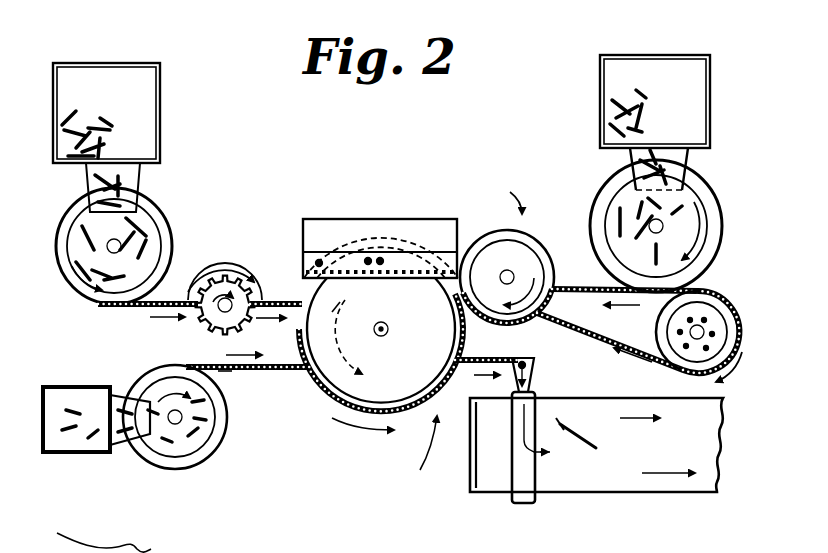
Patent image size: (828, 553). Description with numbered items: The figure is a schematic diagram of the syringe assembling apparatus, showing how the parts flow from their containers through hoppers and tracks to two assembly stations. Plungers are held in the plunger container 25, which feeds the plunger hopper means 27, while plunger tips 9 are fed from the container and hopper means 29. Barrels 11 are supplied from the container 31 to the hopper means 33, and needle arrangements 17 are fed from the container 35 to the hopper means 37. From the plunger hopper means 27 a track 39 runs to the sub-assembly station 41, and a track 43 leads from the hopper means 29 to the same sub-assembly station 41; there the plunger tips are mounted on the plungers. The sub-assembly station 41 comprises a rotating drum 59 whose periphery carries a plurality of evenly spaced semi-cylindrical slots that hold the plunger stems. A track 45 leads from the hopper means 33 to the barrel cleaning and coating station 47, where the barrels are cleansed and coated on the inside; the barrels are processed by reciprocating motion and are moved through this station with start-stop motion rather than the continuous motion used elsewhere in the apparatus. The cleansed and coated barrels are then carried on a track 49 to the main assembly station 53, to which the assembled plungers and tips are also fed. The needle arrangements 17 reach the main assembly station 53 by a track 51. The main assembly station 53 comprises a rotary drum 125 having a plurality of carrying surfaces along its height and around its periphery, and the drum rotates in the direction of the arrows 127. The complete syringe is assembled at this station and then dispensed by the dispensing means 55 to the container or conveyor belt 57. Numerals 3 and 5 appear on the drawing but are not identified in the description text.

The scrap metal pieces 3 is at (591, 288).
The scrap aluminum fraction 5 is at (112, 542).
The plunger tips 9 is at (611, 350).
The barrels 11 is at (134, 311).
The needle arrangements 17 is at (283, 374).
The plunger container 25 is at (668, 55).
The plunger hopper means 27 is at (689, 198).
The container and hopper means 29 is at (705, 306).
The container 31 is at (146, 100).
The hopper means 33 is at (155, 238).
The container 35 is at (72, 448).
The hopper means 37 is at (185, 446).
The track 39 is at (568, 289).
The sub-assembly station 41 is at (517, 192).
The track 43 is at (637, 362).
The track 45 is at (168, 302).
The barrel cleaning and coating station 47 is at (262, 298).
The track 49 is at (281, 300).
The track 51 is at (235, 374).
The main assembly station 53 is at (457, 424).
The dispensing means 55 is at (498, 362).
The container or conveyor belt 57 is at (598, 496).
The rotating drum 59 is at (520, 252).
The rotary drum 125 is at (349, 386).
The arrows 127 is at (358, 300).